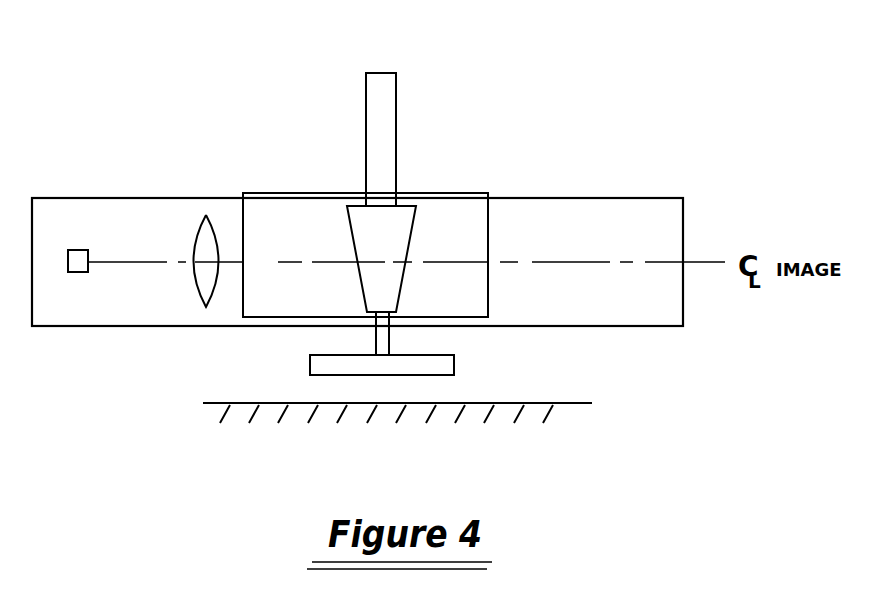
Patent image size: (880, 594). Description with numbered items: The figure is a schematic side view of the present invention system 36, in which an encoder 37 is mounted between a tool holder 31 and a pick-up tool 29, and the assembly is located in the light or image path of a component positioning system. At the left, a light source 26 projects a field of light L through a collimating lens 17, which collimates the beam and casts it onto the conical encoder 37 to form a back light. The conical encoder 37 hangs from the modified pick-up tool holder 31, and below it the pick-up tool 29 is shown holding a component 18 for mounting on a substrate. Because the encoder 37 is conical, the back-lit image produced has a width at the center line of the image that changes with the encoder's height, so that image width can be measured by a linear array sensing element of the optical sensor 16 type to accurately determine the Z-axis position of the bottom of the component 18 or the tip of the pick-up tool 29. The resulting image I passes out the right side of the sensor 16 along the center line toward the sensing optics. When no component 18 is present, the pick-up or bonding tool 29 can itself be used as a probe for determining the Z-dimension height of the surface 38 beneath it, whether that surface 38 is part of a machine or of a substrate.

The optical sensor 16 is at (638, 327).
The collimating lens 17 is at (205, 216).
The component 18 is at (454, 362).
The light source 26 is at (72, 250).
The pick-up tool 29 is at (378, 341).
The pick-up tool holder 31 is at (397, 86).
The system 36 is at (272, 121).
The conical encoder 37 is at (403, 218).
The surface 38 is at (582, 405).
The field of light L is at (138, 262).
The image position I is at (573, 263).